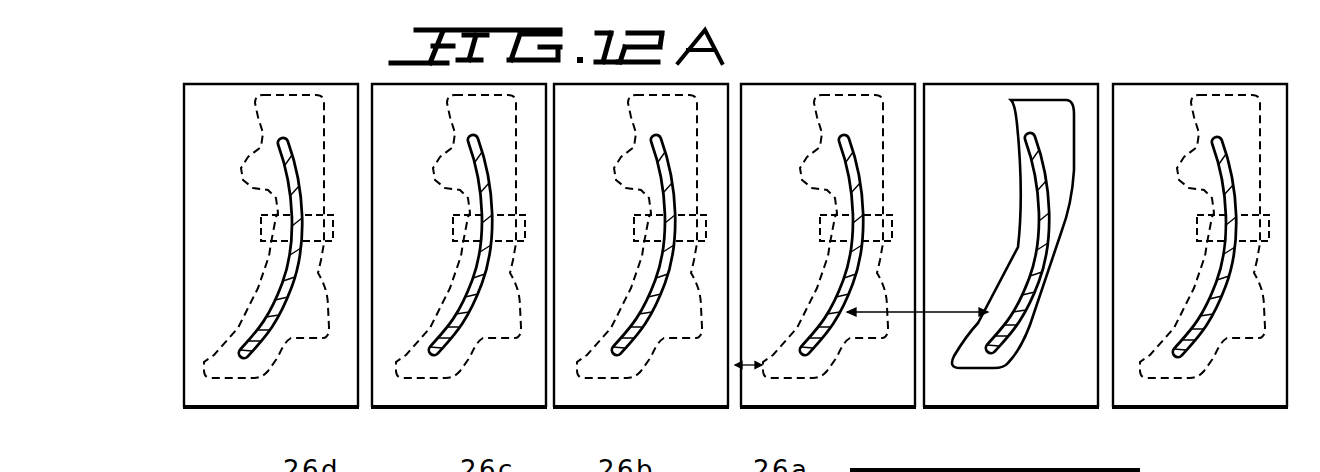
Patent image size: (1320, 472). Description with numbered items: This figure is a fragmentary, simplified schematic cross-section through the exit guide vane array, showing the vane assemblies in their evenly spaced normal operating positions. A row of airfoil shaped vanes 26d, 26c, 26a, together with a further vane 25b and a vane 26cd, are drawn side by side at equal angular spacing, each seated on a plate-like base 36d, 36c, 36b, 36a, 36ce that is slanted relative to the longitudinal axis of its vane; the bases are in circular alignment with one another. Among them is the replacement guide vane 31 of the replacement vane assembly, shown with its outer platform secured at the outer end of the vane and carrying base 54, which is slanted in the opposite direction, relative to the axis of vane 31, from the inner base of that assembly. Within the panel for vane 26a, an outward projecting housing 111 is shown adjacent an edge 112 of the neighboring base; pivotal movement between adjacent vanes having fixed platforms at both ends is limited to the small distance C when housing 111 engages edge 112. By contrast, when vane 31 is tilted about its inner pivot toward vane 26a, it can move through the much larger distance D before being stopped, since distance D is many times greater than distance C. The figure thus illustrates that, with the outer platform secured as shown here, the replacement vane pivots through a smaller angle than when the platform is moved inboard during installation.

The vane 26d is at (282, 158).
The vane 26c is at (470, 152).
The strip insert (variant b) 25b is at (665, 175).
The vane 26a is at (847, 167).
The vane 31 is at (1027, 168).
The strip insert (variant cd) 26cd is at (1220, 173).
The edge of base 112 is at (822, 222).
The outward projecting housing 111 is at (762, 357).
The distance C is at (747, 410).
The distance D is at (940, 312).
The base 36d is at (288, 410).
The base 36c is at (487, 410).
The base 36b is at (657, 410).
The base 36a is at (790, 410).
The base 54 is at (1023, 410).
The panel ce 36ce is at (1177, 410).